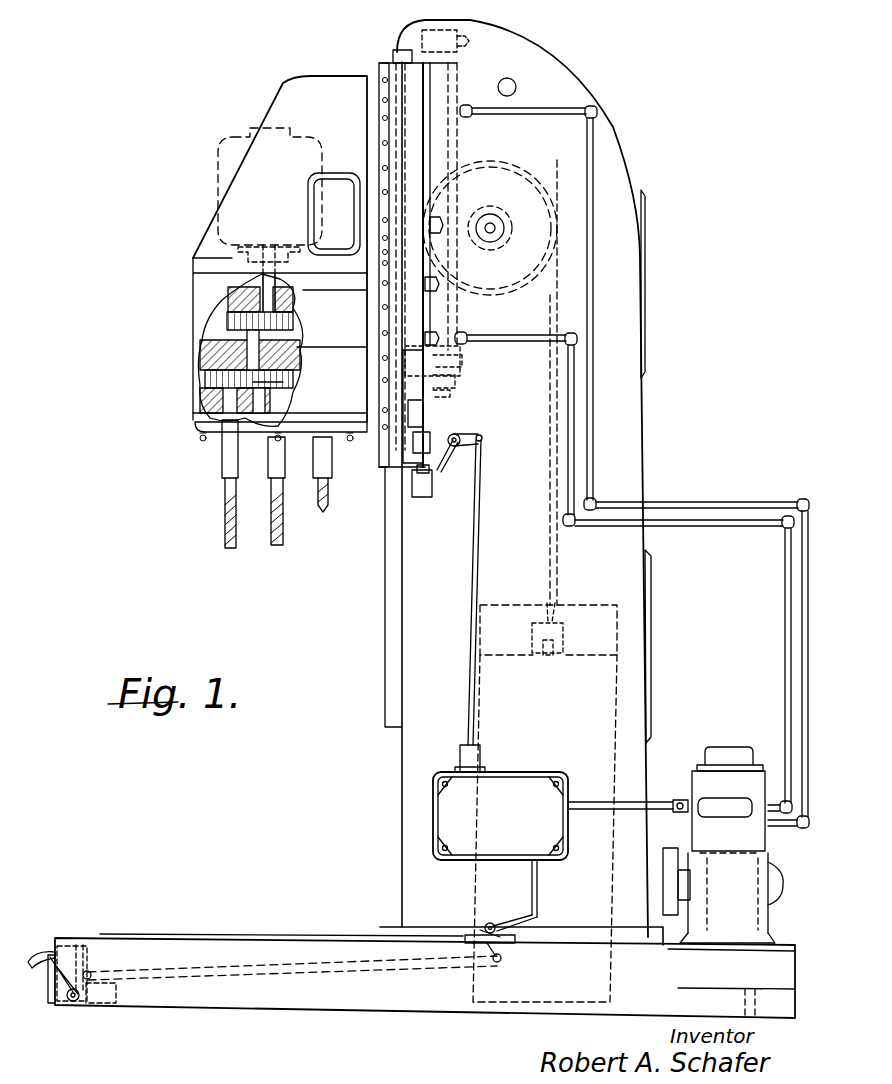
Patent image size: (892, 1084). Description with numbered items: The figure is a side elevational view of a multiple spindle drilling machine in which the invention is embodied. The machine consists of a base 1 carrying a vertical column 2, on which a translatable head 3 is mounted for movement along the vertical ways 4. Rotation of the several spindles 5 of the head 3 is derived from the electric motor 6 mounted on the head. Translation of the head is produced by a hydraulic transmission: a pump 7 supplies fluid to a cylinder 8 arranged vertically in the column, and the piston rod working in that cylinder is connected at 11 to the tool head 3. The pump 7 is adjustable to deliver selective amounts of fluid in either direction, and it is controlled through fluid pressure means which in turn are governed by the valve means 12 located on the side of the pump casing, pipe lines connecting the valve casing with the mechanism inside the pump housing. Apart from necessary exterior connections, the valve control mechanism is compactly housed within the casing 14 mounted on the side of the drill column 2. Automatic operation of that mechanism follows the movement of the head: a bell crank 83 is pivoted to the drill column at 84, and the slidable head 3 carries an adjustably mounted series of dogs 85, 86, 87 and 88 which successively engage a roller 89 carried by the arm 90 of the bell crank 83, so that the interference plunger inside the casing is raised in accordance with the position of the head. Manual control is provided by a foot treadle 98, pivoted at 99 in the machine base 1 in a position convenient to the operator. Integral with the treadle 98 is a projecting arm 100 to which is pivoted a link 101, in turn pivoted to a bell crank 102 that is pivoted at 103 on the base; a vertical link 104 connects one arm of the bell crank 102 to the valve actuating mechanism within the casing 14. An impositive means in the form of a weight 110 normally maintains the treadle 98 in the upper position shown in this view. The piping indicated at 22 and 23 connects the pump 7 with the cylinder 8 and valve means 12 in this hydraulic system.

The base 1 is at (331, 1008).
The vertical column 2 is at (413, 632).
The translatable head 3 is at (193, 258).
The vertical ways 4 is at (383, 570).
The spindles 5 is at (268, 496).
The electric motor 6 is at (226, 147).
The pump 7 is at (747, 777).
The cylinder 8 is at (448, 104).
The connection of piston rod to tool head 11 is at (410, 466).
The valve means 12 is at (707, 800).
The casing 14 is at (522, 778).
The pipe 22 is at (603, 412).
The return pipe 23 is at (785, 647).
The bell crank 83 is at (482, 437).
The pivot 84 is at (454, 434).
The dog 85 is at (441, 222).
The dog 86 is at (440, 282).
The dog 87 is at (440, 334).
The dog 88 is at (433, 483).
The roller 89 is at (436, 471).
The arm 90 is at (440, 468).
The foot treadle 98 is at (32, 958).
The treadle pivot 99 is at (74, 1003).
The projecting arm 100 is at (88, 940).
The link 101 is at (178, 962).
The bell crank 102 is at (512, 921).
The pivot 103 is at (486, 927).
The vertical link 104 is at (539, 882).
The weight 110 is at (112, 992).